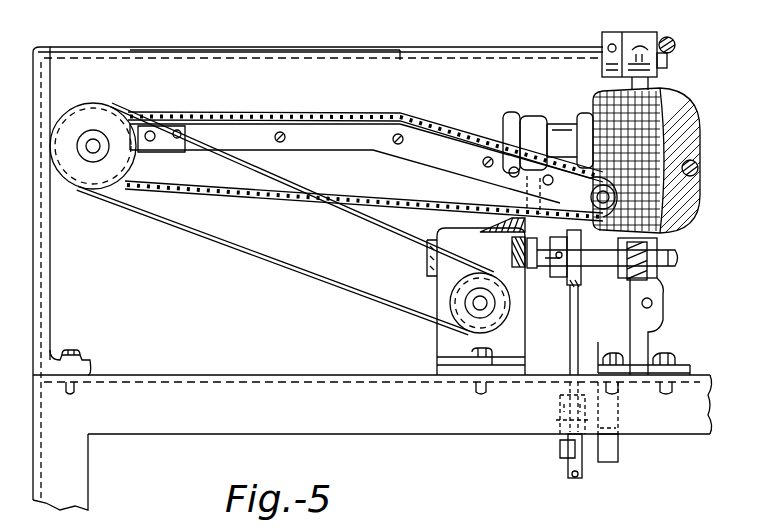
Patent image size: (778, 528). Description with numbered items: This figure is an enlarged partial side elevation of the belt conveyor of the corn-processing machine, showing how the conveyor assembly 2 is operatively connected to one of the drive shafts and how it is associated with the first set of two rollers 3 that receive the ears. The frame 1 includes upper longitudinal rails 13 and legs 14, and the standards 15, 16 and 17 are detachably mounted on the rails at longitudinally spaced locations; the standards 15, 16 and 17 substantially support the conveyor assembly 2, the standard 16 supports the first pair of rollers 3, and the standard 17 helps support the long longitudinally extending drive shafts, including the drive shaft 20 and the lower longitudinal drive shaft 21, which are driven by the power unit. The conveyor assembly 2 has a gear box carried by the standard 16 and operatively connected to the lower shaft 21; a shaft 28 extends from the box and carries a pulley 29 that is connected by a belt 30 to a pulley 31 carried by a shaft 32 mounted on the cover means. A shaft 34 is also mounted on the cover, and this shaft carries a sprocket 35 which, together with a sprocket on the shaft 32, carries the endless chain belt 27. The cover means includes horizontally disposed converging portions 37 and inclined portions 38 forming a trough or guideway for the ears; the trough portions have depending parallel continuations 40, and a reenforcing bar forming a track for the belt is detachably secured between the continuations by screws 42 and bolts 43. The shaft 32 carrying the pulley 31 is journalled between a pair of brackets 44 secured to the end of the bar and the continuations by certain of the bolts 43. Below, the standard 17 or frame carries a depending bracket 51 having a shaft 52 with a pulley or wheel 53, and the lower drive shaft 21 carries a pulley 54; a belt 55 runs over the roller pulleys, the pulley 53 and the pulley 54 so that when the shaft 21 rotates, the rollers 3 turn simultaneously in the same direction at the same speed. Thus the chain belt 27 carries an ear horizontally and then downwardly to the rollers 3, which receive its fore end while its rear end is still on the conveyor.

The frame 1 is at (109, 458).
The conveyor assembly 2 is at (364, 153).
The first set of two rollers 3 is at (693, 102).
The upper longitudinal rails 13 is at (215, 428).
The legs 14 is at (84, 490).
The standard 15 is at (44, 258).
The standard 16 is at (436, 345).
The standard 17 is at (650, 337).
The drive shaft 20 is at (677, 47).
The lower longitudinal drive shaft 21 is at (673, 252).
The endless chain belt 27 is at (348, 116).
The shaft 28 is at (470, 306).
The pulley 29 is at (452, 291).
The belt 30 is at (341, 282).
The pulley 31 is at (88, 112).
The shaft 32 is at (95, 143).
The shaft 34 is at (603, 212).
The sprocket 35 is at (512, 236).
The horizontally disposed converging portions 37 is at (265, 60).
The inclined portions 38 is at (490, 86).
The depending parallel continuations 40 is at (376, 148).
The screws 42 is at (405, 141).
The bolts 43 is at (155, 133).
The brackets 44 is at (160, 148).
The depending bracket 51 is at (622, 456).
The shaft 52 is at (558, 447).
The pulley or wheel 53 is at (567, 472).
The pulley 54 is at (561, 278).
The belt 55 is at (572, 360).